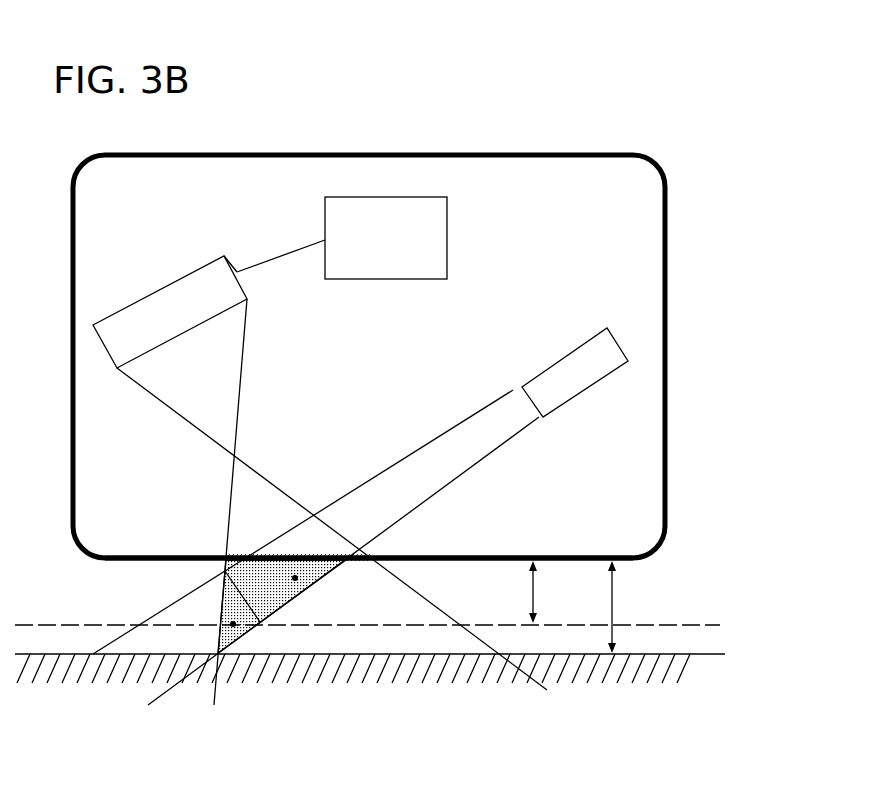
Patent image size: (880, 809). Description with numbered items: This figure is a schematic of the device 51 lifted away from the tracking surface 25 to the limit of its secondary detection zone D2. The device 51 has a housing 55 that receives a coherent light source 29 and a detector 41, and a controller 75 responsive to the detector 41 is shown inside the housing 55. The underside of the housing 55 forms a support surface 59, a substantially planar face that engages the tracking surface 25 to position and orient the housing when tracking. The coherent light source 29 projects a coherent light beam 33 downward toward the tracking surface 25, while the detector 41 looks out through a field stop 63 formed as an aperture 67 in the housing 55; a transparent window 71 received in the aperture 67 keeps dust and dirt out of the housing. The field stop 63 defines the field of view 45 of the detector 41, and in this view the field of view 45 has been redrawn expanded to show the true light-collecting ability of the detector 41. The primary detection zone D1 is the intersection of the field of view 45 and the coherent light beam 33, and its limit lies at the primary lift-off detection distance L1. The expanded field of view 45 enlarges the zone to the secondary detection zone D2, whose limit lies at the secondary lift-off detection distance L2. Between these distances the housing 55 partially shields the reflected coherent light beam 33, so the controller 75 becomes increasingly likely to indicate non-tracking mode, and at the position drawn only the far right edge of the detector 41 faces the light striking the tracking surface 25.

The device 51 is at (369, 346).
The housing 55 is at (537, 152).
The support surface 59 is at (144, 562).
The field stop 63 is at (252, 539).
The aperture 67 is at (228, 556).
The controller 75 is at (342, 238).
The detector 41 is at (170, 312).
The field of view 45 is at (244, 362).
The coherent light source 29 is at (567, 353).
The coherent light beam 33 is at (450, 488).
The transparent window 71 is at (360, 562).
The primary detection zone D1 is at (300, 584).
The secondary detection zone D2 is at (240, 627).
The primary lift-off detection distance L1 is at (545, 592).
The secondary lift-off detection distance L2 is at (624, 607).
The tracking surface 25 is at (712, 652).